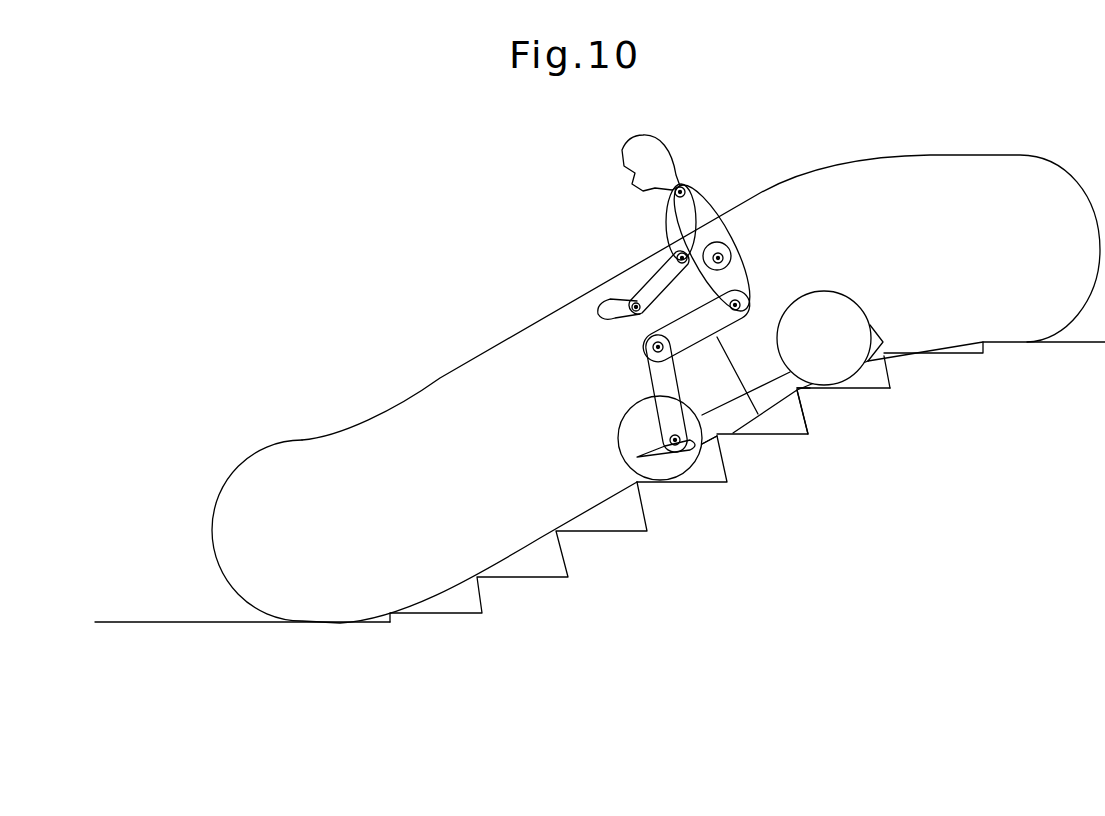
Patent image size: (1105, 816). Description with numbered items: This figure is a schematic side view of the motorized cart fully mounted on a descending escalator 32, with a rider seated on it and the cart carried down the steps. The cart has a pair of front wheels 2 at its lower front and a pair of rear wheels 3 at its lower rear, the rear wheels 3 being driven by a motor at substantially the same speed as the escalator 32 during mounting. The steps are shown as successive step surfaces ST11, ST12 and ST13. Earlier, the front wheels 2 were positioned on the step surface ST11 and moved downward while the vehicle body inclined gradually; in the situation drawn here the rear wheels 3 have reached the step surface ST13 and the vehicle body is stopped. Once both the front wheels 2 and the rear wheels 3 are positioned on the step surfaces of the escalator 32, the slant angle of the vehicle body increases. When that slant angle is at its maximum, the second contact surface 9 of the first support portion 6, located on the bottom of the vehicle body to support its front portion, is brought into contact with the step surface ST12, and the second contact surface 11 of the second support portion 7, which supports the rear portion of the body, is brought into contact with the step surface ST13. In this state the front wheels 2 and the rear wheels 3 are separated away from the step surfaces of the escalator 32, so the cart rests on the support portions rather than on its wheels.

The front wheels 2 is at (656, 482).
The rear wheels 3 is at (835, 310).
The first support portion 6 is at (688, 476).
The second support portion 7 is at (797, 394).
The second contact surface 9 is at (708, 444).
The second contact surface 11 is at (802, 392).
The escalator 32 is at (522, 657).
The step surface ST11 is at (714, 487).
The step surface ST12 is at (776, 437).
The step surface ST13 is at (878, 392).